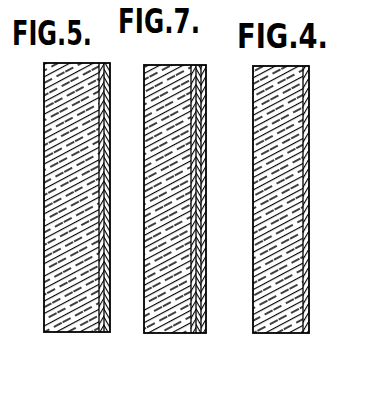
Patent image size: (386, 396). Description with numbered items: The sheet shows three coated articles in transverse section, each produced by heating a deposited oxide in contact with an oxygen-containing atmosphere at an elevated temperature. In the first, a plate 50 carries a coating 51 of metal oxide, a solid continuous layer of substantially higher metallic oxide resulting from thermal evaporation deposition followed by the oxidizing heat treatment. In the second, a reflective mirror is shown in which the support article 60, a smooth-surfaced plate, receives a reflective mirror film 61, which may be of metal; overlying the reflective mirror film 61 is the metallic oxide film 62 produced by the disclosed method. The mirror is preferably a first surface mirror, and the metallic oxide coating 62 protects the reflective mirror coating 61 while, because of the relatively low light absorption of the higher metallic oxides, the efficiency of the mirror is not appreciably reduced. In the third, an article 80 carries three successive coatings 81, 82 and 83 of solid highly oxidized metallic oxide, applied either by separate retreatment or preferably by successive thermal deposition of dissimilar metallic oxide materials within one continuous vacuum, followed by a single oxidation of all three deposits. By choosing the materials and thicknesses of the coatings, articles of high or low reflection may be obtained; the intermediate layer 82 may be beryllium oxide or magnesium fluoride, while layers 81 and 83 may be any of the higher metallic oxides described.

In FIG. 4, the plate 50 is at (290, 176).
In FIG. 4, the coating of metal oxide 51 is at (303, 128).
In FIG. 5, the support article 60 is at (44, 291).
In FIG. 5, the reflective mirror film 61 is at (101, 81).
In FIG. 5, the metallic oxide film 62 is at (107, 114).
In FIG. 7, the article 80 is at (162, 327).
In FIG. 7, the first coating 81 is at (197, 103).
In FIG. 7, the intermediate layer 82 is at (199, 118).
In FIG. 7, the third coating 83 is at (204, 156).